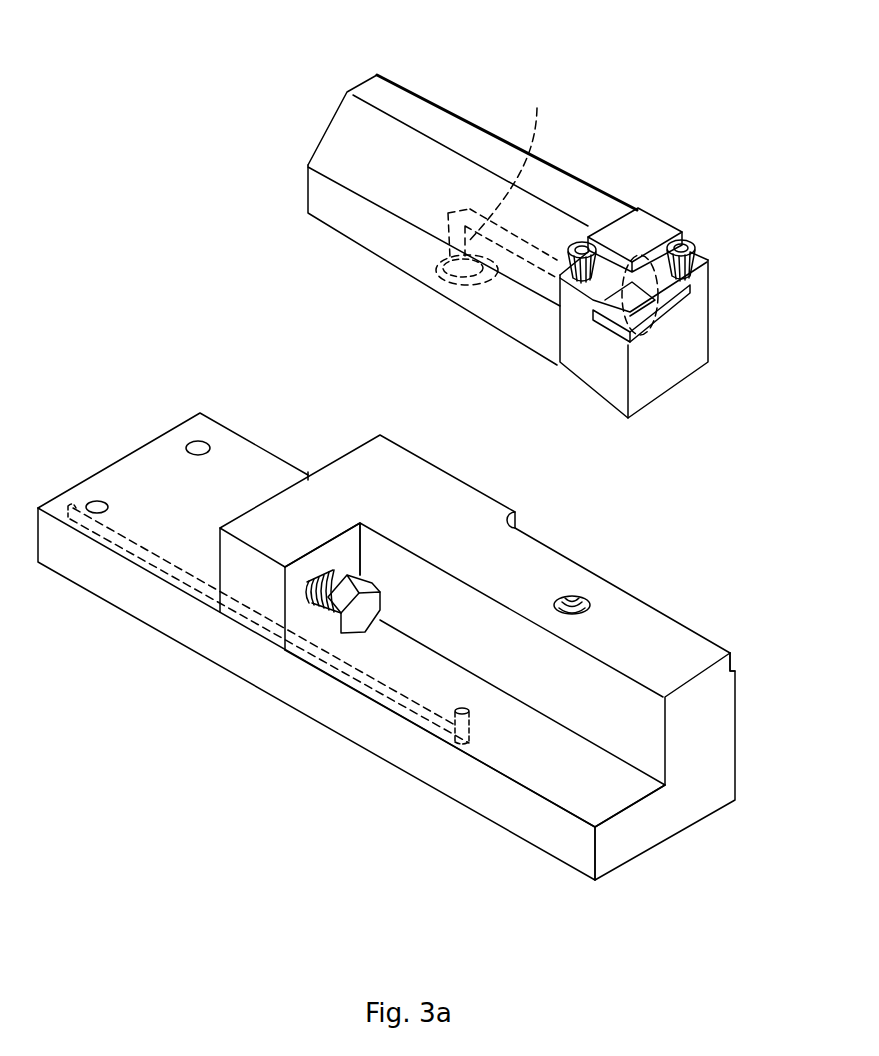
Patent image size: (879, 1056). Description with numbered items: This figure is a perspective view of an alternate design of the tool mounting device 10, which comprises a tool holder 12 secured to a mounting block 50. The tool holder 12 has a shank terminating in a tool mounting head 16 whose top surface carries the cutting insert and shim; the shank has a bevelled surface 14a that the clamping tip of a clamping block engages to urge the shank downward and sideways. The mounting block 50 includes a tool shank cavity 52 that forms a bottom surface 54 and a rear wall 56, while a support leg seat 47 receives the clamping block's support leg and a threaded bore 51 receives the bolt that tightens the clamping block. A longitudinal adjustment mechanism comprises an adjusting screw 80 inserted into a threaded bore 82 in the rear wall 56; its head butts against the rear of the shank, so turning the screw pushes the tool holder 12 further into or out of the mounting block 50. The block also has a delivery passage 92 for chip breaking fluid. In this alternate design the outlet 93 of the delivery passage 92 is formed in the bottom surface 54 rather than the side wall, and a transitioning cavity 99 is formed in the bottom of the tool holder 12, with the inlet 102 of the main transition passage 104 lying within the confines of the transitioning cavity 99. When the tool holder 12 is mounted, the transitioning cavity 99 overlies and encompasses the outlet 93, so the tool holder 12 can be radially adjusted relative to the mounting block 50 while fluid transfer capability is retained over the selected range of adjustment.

The tool mounting device 10 is at (207, 168).
The tool holder 12 is at (571, 158).
The bevelled surface 14a is at (383, 133).
The tool mounting head 16 is at (698, 340).
The transitioning cavity 99 is at (452, 266).
The inlet opening 102 is at (454, 264).
The main transition passage 104 is at (564, 210).
The support leg seat 47 is at (736, 668).
The mounting block 50 is at (330, 456).
The threaded bore 51 is at (578, 596).
The tool shank cavity 52 is at (514, 744).
The bottom surface 54 is at (555, 783).
The rear wall 56 is at (348, 555).
The adjusting screw 80 is at (352, 628).
The threaded bore 82 is at (310, 608).
The delivery passage 92 is at (160, 568).
The outlet opening 93 is at (458, 708).